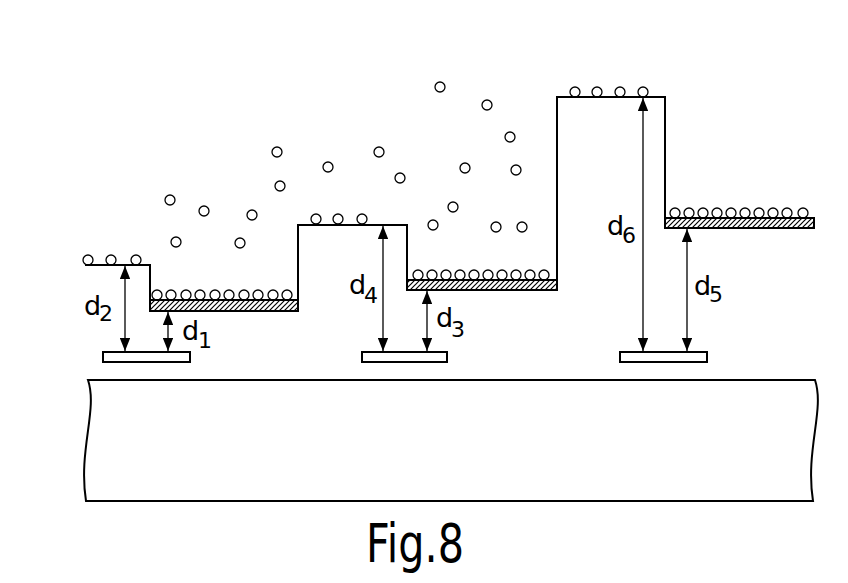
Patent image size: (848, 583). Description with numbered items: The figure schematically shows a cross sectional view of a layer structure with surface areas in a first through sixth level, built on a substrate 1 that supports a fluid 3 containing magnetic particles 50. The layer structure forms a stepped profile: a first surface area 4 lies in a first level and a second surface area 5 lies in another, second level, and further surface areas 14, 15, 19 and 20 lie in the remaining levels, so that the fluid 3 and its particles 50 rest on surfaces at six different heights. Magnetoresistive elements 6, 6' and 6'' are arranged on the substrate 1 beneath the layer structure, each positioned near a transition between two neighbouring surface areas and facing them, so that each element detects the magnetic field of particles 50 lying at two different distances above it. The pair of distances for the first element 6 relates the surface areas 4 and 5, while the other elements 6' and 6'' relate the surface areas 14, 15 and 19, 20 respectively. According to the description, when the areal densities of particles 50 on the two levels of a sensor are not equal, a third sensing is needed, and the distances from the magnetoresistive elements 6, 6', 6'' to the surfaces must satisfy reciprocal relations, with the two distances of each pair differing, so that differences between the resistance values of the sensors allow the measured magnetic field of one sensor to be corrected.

The substrate 1 is at (112, 466).
The fluid 3 is at (103, 165).
The first surface area 4 is at (255, 311).
The second surface area 5 is at (102, 262).
The magnetoresistive element 6 is at (146, 391).
The second pad 6' is at (404, 391).
The third pad 6'' is at (663, 391).
The second hatched layer 14 is at (500, 291).
The second step top surface 15 is at (352, 218).
The third hatched layer 19 is at (780, 229).
The third step top surface 20 is at (610, 90).
The particles 50 is at (208, 291).